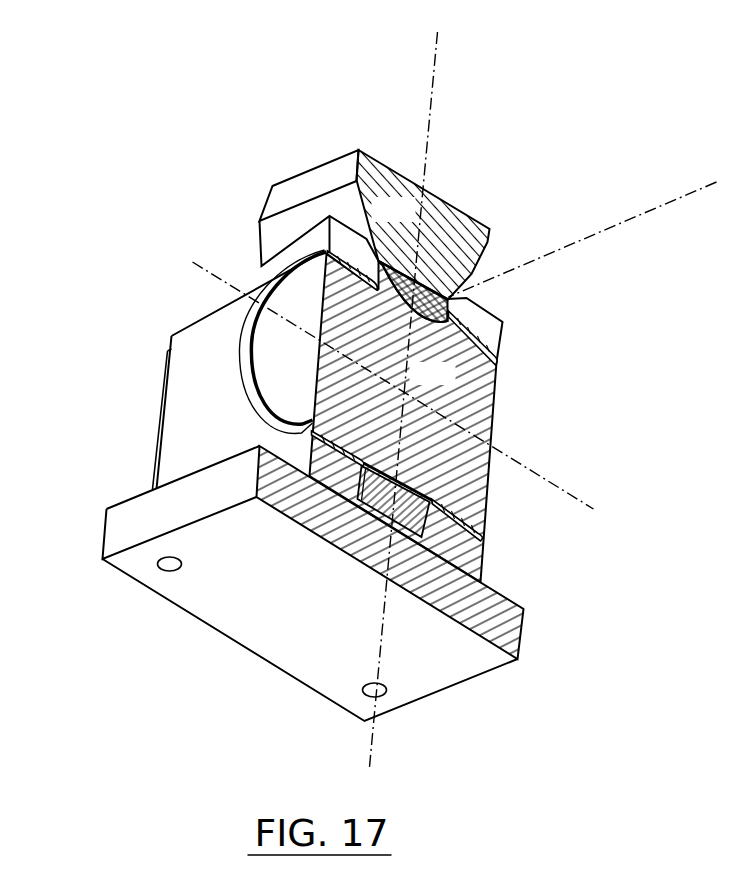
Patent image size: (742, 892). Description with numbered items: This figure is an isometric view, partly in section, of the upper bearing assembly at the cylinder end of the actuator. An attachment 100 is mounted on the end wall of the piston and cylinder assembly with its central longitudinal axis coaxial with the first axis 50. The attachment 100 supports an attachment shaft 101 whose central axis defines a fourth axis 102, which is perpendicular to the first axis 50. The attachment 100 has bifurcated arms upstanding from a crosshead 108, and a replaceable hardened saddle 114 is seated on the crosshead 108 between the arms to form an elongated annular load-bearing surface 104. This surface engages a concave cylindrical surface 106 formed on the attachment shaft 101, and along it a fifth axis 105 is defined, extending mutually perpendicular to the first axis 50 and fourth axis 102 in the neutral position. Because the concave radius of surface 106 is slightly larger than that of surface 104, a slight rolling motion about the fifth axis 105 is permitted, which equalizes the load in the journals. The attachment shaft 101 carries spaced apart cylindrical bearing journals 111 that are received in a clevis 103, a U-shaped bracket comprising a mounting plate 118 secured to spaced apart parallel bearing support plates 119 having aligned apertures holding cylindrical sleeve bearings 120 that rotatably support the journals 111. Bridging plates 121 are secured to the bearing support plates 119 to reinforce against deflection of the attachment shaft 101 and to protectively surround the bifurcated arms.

The first axis 50 is at (431, 102).
The attachment 100 is at (308, 187).
The attachment shaft 101 is at (473, 390).
The fourth axis 102 is at (566, 503).
The clevis 103 is at (207, 353).
The elongated annular load-bearing surface 104 is at (436, 322).
The fifth axis 105 is at (630, 220).
The concave cylindrical surface 106 is at (397, 261).
The crosshead 108 is at (473, 220).
The cylindrical bearing journals 111 is at (337, 445).
The replaceable hardened saddle 114 is at (503, 327).
The mounting plate 118 is at (213, 612).
The bearing support plates 119 is at (225, 413).
The cylindrical sleeve bearings 120 is at (225, 313).
The bridging plates 121 is at (157, 437).